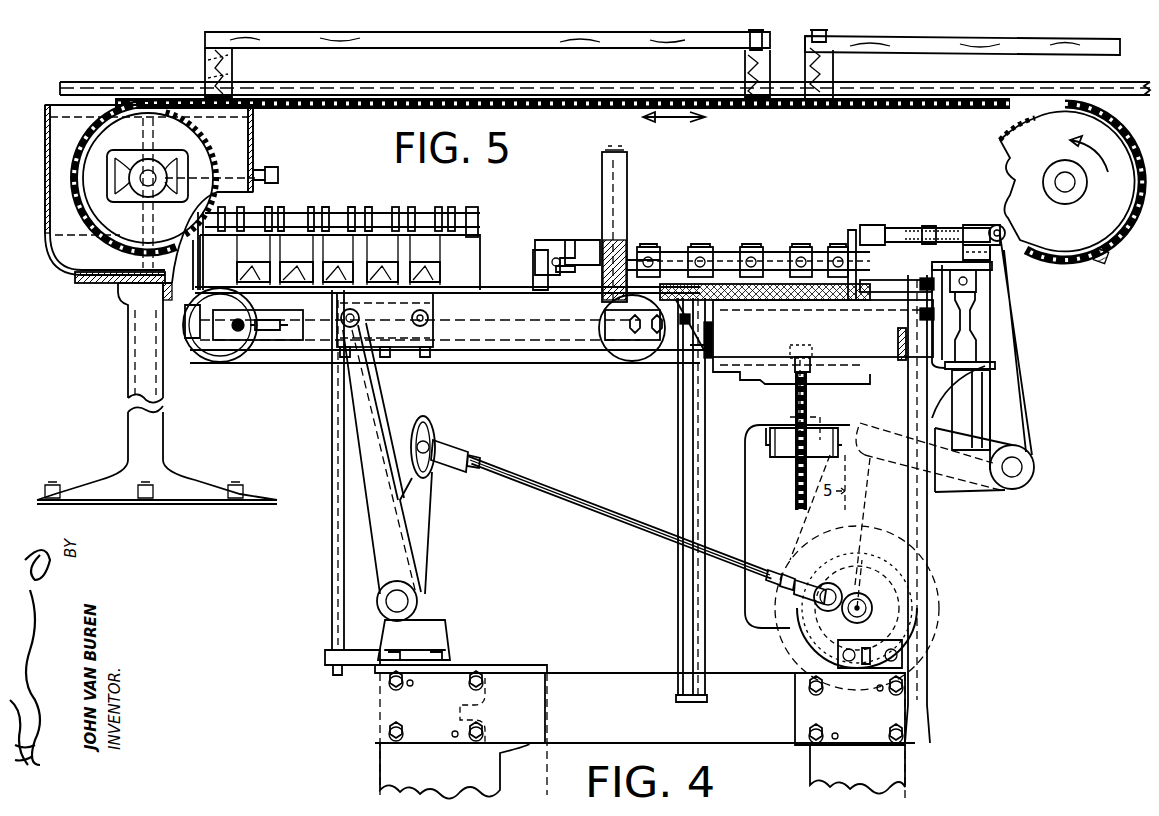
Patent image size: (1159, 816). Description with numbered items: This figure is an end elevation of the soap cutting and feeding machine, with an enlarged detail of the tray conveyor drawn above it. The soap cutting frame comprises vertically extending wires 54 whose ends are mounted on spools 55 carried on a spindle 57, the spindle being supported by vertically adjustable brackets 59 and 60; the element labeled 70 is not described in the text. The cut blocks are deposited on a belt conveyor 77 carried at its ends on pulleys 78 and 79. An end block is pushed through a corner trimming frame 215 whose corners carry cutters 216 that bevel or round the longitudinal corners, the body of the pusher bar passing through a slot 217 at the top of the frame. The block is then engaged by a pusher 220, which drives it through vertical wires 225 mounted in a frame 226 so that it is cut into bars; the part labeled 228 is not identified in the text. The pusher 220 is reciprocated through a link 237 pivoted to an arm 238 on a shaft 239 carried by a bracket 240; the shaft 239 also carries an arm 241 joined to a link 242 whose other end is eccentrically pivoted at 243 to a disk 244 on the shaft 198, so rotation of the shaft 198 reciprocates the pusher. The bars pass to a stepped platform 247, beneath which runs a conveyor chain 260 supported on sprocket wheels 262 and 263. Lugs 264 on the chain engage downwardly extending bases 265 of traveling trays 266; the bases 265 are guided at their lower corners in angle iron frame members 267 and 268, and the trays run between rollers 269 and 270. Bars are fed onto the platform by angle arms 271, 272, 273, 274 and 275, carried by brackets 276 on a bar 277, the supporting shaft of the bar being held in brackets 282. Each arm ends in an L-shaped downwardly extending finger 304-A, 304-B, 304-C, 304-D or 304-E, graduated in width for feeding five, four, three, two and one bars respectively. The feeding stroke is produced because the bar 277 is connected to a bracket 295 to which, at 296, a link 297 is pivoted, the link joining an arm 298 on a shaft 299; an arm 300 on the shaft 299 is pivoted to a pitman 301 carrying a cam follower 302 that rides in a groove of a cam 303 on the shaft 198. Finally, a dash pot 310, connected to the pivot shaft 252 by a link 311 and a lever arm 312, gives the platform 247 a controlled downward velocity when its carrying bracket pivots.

In FIG. 5, the traveling supports or trays 266 is at (636, 32).
In FIG. 5, the dash pot 310 is at (754, 30).
In FIG. 4, the dash pot 310 is at (987, 400).
In FIG. 5, the bases 265 is at (745, 76).
In FIG. 4, the bases 265 is at (792, 380).
In FIG. 5, the lugs 264 is at (233, 95).
In FIG. 4, the lugs 264 is at (806, 344).
In FIG. 5, the sprocket wheel 262 is at (220, 156).
In FIG. 5, the sprocket wheel 263 is at (1010, 144).
In FIG. 5, the conveyor chain 260 is at (982, 112).
In FIG. 4, the conveyor chain 260 is at (828, 376).
In FIG. 4, the bracket 59 is at (246, 214).
In FIG. 4, the spools 55 is at (372, 210).
In FIG. 4, the cam 70 is at (420, 210).
In FIG. 4, the bracket 60 is at (466, 208).
In FIG. 4, the spindle 57 is at (476, 224).
In FIG. 4, the wires 54 is at (340, 262).
In FIG. 4, the cutters 216 is at (554, 258).
In FIG. 4, the corner trimming frame 215 is at (548, 256).
In FIG. 4, the slot or opening 217 is at (558, 270).
In FIG. 4, the pusher 220 is at (532, 268).
In FIG. 4, the frame 226 is at (628, 171).
In FIG. 4, the vertical wires 225 is at (629, 197).
In FIG. 4, the guide 228 is at (628, 228).
In FIG. 4, the L-shaped finger 304-A is at (650, 244).
In FIG. 4, the L-shaped finger 304-B is at (703, 244).
In FIG. 4, the L-shaped finger 304-C is at (753, 244).
In FIG. 4, the L-shaped finger 304-D is at (804, 244).
In FIG. 4, the L-shaped finger 304-E is at (852, 297).
In FIG. 4, the angle arm 271 is at (662, 246).
In FIG. 4, the angle arm 272 is at (706, 246).
In FIG. 4, the angle arm 273 is at (756, 248).
In FIG. 4, the angle arm 274 is at (802, 247).
In FIG. 4, the angle arm 275 is at (838, 246).
In FIG. 4, the brackets 276 is at (753, 248).
In FIG. 4, the pivot 296 is at (878, 226).
In FIG. 4, the bracket 295 is at (886, 228).
In FIG. 4, the pivotal link 297 is at (932, 228).
In FIG. 4, the pivot shaft 252 is at (956, 226).
In FIG. 4, the brackets 282 is at (988, 255).
In FIG. 4, the arm 298 is at (980, 264).
In FIG. 4, the lever arm 312 is at (976, 272).
In FIG. 4, the link 311 is at (976, 332).
In FIG. 4, the shaft 299 is at (1022, 468).
In FIG. 4, the stepped platform 247 is at (868, 282).
In FIG. 4, the bar 277 is at (765, 282).
In FIG. 4, the roller 269 is at (692, 318).
In FIG. 4, the angle iron frame member 267 is at (713, 349).
In FIG. 4, the roller 270 is at (918, 314).
In FIG. 4, the angle iron frame member 268 is at (886, 344).
In FIG. 4, the arm 300 is at (862, 424).
In FIG. 4, the link or pitman 301 is at (850, 512).
In FIG. 4, the cam follower 302 is at (927, 522).
In FIG. 4, the eccentric pivot 243 is at (797, 552).
In FIG. 4, the shaft 198 is at (888, 604).
In FIG. 4, the cam 303 is at (788, 630).
In FIG. 4, the disk 244 is at (808, 638).
In FIG. 4, the link 237 is at (434, 338).
In FIG. 4, the arm 238 is at (368, 390).
In FIG. 4, the pulley 78 is at (223, 356).
In FIG. 4, the belt conveyor 77 is at (541, 360).
In FIG. 4, the pulley 79 is at (626, 362).
In FIG. 4, the link 242 is at (533, 478).
In FIG. 4, the arm 241 is at (423, 533).
In FIG. 4, the shaft 239 is at (412, 602).
In FIG. 4, the bracket 240 is at (430, 640).